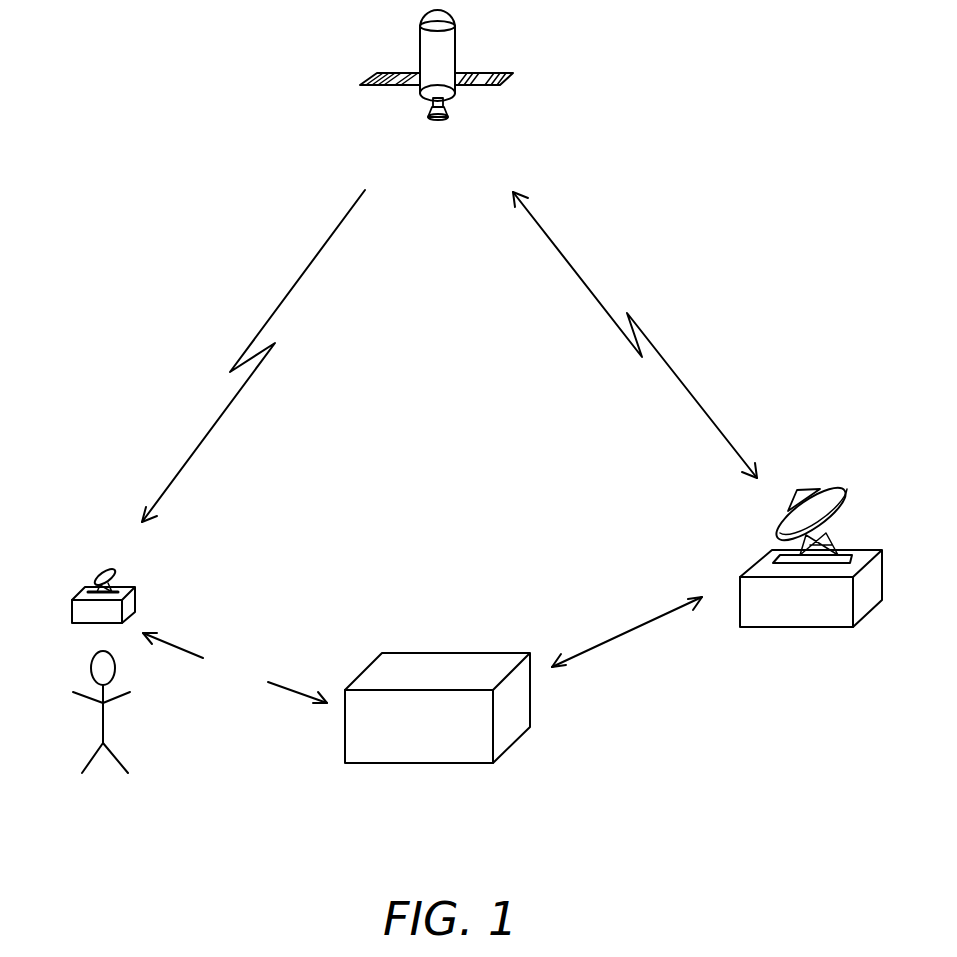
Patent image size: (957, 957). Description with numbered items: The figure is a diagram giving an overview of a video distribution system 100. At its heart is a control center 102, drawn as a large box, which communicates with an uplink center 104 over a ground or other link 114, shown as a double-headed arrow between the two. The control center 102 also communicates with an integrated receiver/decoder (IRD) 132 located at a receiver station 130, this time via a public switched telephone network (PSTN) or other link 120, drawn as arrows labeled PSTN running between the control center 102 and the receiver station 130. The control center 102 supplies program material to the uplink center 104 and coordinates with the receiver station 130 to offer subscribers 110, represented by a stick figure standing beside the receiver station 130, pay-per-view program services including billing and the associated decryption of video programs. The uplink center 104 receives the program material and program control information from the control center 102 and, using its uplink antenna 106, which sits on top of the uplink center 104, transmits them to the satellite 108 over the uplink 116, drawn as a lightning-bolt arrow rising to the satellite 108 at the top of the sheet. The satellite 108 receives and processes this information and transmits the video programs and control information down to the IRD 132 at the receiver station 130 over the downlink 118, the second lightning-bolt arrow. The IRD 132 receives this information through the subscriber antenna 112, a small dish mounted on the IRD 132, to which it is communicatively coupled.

The video distribution system 100 is at (727, 232).
The control center 102 is at (510, 745).
The uplink center 104 is at (792, 627).
The uplink antenna 106 is at (848, 497).
The satellite 108 is at (483, 85).
The subscribers 110 is at (128, 718).
The subscriber antenna 112 is at (102, 570).
The ground or other link 114 is at (620, 632).
The uplink 116 is at (677, 380).
The downlink 118 is at (300, 280).
The public switched telephone network (PSTN) or other link 120 is at (270, 640).
The receiver station 130 is at (155, 576).
The integrated receiver/decoder (IRD) 132 is at (72, 612).